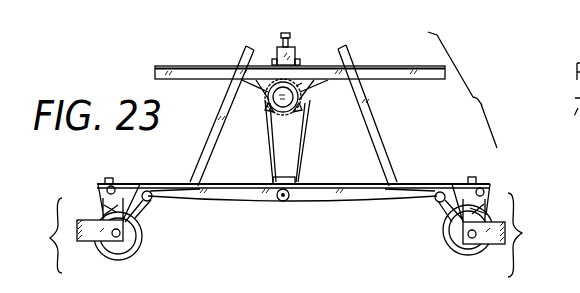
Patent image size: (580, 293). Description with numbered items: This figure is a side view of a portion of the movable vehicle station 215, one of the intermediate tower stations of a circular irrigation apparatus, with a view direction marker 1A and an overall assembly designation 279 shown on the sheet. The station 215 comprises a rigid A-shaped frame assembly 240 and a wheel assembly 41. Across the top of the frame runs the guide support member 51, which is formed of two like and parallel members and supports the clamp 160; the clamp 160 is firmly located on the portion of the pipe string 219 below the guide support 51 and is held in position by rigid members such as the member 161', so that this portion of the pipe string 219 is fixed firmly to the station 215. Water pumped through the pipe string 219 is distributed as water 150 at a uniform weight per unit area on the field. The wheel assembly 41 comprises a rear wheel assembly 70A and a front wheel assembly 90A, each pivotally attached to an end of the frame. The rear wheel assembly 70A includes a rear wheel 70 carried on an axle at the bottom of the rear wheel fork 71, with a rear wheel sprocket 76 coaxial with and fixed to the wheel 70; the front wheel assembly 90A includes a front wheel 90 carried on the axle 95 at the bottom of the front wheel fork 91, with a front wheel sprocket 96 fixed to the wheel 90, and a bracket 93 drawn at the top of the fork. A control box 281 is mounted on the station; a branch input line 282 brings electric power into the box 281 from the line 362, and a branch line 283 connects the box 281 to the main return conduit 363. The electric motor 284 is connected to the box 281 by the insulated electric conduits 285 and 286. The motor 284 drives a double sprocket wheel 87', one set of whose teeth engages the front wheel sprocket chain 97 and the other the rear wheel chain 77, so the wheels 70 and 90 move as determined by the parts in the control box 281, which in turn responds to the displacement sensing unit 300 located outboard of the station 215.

The frame assembly 279 is at (123, 12).
The displacement sensing unit 300 is at (293, 33).
The branch input line 282 is at (272, 58).
The control box 281 is at (295, 50).
The branch line 283 is at (300, 61).
The guide support member 51 is at (388, 67).
The rigid member 161' is at (277, 94).
The clamp 160 is at (268, 103).
The pipe string 219 is at (302, 104).
The line 362 is at (268, 112).
The water 150 is at (283, 112).
The main return conduit 363 is at (300, 112).
The A-shaped frame assembly 240 is at (382, 127).
The station 215 is at (472, 90).
The insulated electric conduit 285 is at (270, 173).
The insulated electric conduit 286 is at (303, 150).
The stop 93 is at (110, 178).
The front wheel fork 91 is at (108, 212).
The front wheel assembly 90A is at (40, 235).
The front wheel 90 is at (122, 214).
The front wheel sprocket 96 is at (110, 255).
The axle 95 is at (126, 245).
The front wheel sprocket chain 97 is at (252, 199).
The double sprocket wheel 87' is at (292, 207).
The electric motor 284 is at (297, 186).
The rear wheel chain 77 is at (365, 197).
The wheel assembly 41 is at (482, 188).
The rear wheel fork 71 is at (476, 214).
The rear wheel 70 is at (462, 217).
The rear wheel assembly 70A is at (533, 235).
The rear wheel sprocket 76 is at (481, 250).
The section line 1A is at (312, 260).